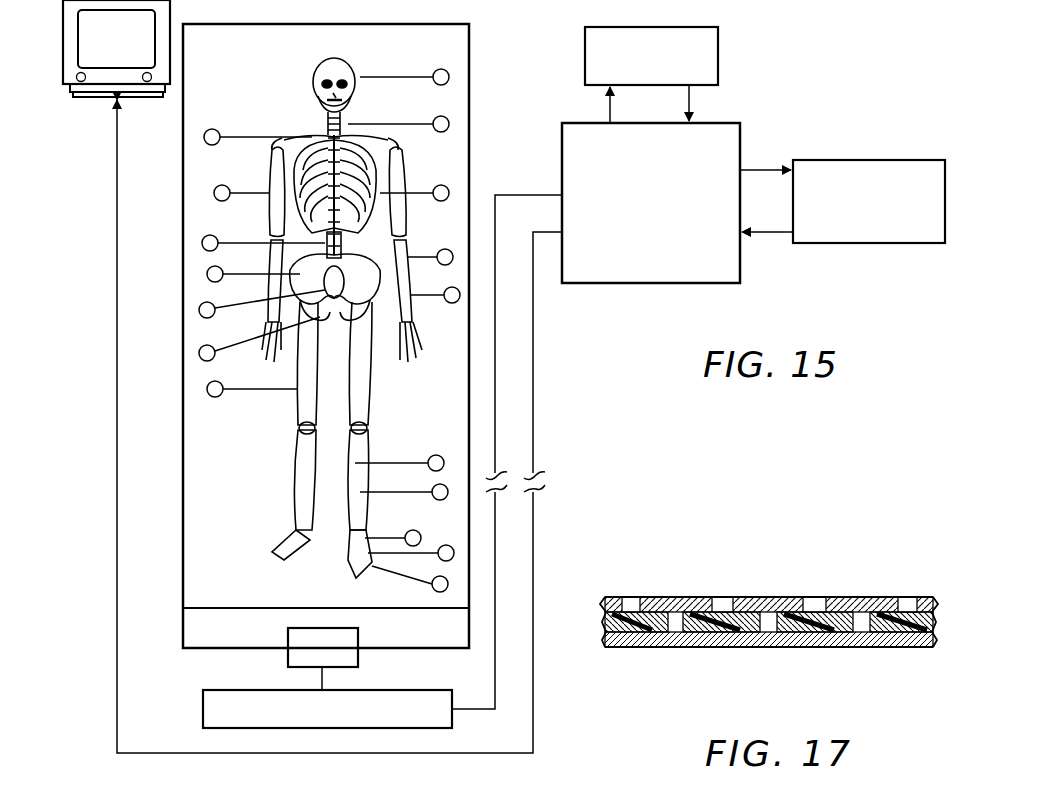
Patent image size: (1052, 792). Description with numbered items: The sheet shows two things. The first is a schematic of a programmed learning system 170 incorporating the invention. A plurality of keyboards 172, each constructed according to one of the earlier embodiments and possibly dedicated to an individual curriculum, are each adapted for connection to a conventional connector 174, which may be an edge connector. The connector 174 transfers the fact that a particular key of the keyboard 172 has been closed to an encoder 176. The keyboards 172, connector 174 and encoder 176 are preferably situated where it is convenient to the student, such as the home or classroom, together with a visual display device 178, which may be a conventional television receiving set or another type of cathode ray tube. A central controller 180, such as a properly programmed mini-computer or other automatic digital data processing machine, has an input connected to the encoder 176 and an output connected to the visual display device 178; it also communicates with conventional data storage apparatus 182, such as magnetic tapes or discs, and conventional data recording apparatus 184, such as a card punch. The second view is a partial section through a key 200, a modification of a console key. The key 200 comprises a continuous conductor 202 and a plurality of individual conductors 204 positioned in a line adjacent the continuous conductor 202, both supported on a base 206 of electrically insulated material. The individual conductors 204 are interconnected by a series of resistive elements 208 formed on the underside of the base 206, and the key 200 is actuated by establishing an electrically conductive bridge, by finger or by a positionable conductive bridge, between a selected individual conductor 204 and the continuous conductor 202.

In FIG. 15, the programmed learning system 170 is at (480, 31).
In FIG. 15, the keyboard 172 is at (377, 54).
In FIG. 15, the connector 174 is at (298, 652).
In FIG. 15, the encoder 176 is at (435, 703).
In FIG. 15, the visual display device 178 is at (170, 12).
In FIG. 15, the central controller 180 is at (726, 140).
In FIG. 15, the data storage apparatus 182 is at (718, 52).
In FIG. 15, the data recording apparatus 184 is at (915, 168).
In FIG. 17, the key 200 is at (713, 576).
In FIG. 17, the continuous conductor 202 is at (909, 597).
In FIG. 17, the individual conductors 204 is at (661, 597).
In FIG. 17, the base 206 is at (815, 636).
In FIG. 17, the resistive elements 208 is at (648, 648).